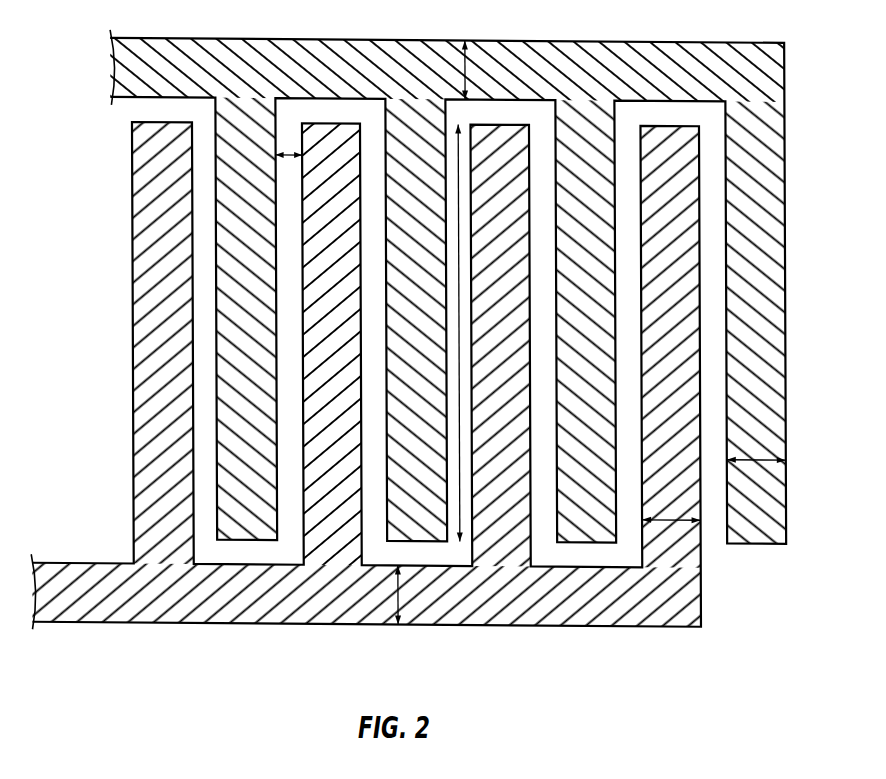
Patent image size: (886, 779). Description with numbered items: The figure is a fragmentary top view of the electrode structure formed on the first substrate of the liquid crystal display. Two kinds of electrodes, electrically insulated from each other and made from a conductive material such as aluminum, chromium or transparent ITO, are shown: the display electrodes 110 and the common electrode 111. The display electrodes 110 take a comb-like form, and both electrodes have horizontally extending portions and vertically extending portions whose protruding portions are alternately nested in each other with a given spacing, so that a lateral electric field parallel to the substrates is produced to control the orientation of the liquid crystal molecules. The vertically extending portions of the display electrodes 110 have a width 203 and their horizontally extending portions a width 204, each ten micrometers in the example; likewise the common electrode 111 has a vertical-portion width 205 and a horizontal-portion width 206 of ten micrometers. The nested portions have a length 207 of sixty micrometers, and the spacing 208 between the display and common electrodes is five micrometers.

The display electrodes 110 is at (187, 35).
The common electrode 111 is at (250, 605).
The width of vertically extending portions of display electrodes 203 is at (468, 60).
The width of horizontally extending portions of display electrodes 204 is at (761, 454).
The width of vertically extending portions of common electrode 205 is at (396, 587).
The width of horizontally extending portions of common electrode 206 is at (670, 517).
The length of nested portions 207 is at (458, 489).
The spacing between display and common electrodes 208 is at (289, 151).